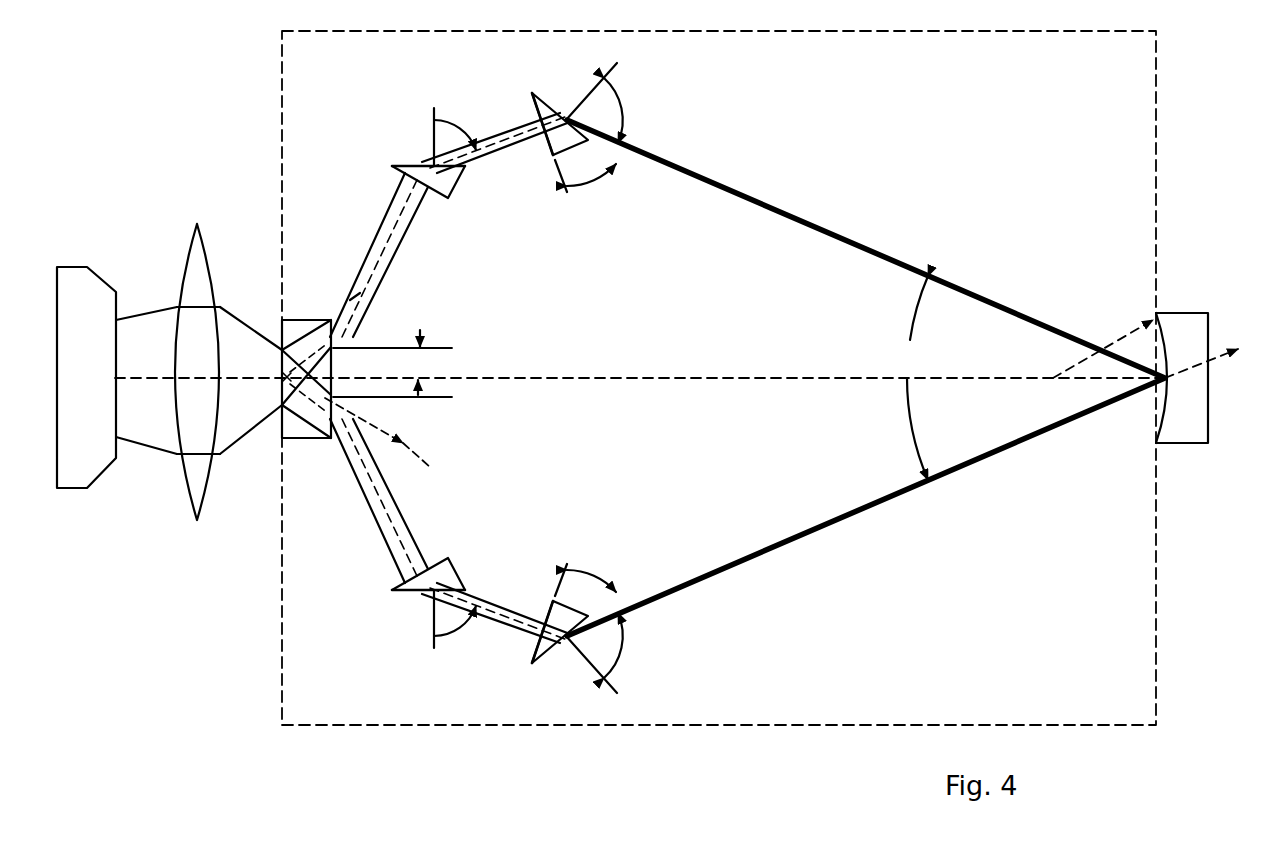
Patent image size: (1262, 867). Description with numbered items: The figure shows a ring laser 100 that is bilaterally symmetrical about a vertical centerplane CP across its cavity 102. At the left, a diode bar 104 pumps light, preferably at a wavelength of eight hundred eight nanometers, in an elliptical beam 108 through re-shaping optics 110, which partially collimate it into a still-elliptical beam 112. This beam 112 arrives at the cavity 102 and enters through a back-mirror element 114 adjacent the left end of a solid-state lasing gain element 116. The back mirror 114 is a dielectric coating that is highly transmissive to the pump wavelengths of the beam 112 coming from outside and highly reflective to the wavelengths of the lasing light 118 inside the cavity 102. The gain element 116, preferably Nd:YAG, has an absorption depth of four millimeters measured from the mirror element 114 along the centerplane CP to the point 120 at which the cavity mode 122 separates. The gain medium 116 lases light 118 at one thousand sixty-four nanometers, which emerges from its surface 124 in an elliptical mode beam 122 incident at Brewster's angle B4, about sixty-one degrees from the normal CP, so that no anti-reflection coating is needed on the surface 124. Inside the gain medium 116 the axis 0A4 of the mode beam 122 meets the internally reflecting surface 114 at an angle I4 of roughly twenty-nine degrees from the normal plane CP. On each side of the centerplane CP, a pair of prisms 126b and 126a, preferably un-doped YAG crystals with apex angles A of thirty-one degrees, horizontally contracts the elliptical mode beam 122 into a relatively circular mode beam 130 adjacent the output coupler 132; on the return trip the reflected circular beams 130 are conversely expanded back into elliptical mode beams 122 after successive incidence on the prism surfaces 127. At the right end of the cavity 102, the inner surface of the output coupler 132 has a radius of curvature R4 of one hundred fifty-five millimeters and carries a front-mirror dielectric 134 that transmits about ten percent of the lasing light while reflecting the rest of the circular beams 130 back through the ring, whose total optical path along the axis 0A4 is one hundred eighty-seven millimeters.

The ring laser 100 is at (232, 718).
The cavity 102 is at (342, 702).
The diode bar 104 is at (88, 305).
The elliptical beam 108 is at (138, 305).
The re-shaping optics 110 is at (204, 226).
The partially collimated beam 112 is at (228, 302).
The back-mirror element 114 is at (273, 440).
The solid-state lasing gain element 116 is at (296, 441).
The lasing light 118 is at (307, 331).
The point of separation of cavity mode 120 is at (345, 377).
The cavity mode beam 122 is at (382, 230).
The surface of gain element 124 is at (346, 300).
The second prism 126a is at (537, 91).
The first prism 126b is at (506, 210).
The prism surfaces 127 is at (396, 165).
The circular mode beams 130 is at (826, 196).
The output coupler 132 is at (1188, 311).
The front-mirror dielectric 134 is at (1160, 416).
The radius of curvature R4 is at (1069, 371).
The centerplane CP is at (880, 378).
The optical axis 0A4 is at (1008, 284).
The Brewster's angle of incidence B4 is at (376, 283).
The internal incidence angle I4 is at (388, 423).
The apex angle A is at (580, 195).